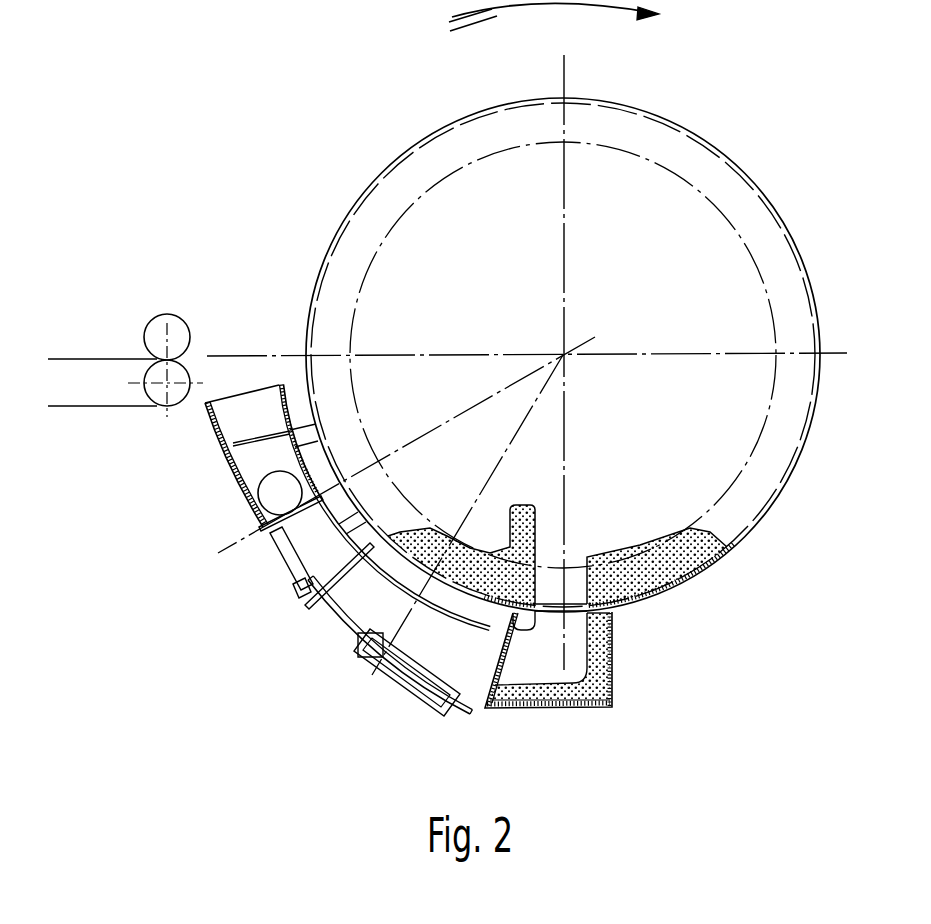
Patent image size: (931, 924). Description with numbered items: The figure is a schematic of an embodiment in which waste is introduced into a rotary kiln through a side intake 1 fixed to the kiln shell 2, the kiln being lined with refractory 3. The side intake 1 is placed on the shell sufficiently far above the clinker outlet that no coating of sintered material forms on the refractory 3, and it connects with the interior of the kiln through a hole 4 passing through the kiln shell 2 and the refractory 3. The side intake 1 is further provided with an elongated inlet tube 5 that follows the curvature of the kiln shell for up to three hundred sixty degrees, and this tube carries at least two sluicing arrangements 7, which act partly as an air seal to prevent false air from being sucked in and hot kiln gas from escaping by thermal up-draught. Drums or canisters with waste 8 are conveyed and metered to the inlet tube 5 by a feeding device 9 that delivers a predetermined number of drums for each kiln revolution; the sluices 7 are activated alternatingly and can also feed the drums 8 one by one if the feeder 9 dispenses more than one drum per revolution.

The side intake 1 is at (614, 660).
The rotating drum 2 is at (757, 518).
The refractory 3 is at (676, 565).
The hole 4 is at (560, 535).
The elongated inlet tube 5 is at (340, 614).
The sluicing arrangements 7 is at (293, 572).
The drums or canisters with waste 8 is at (160, 318).
The feeding device 9 is at (161, 404).